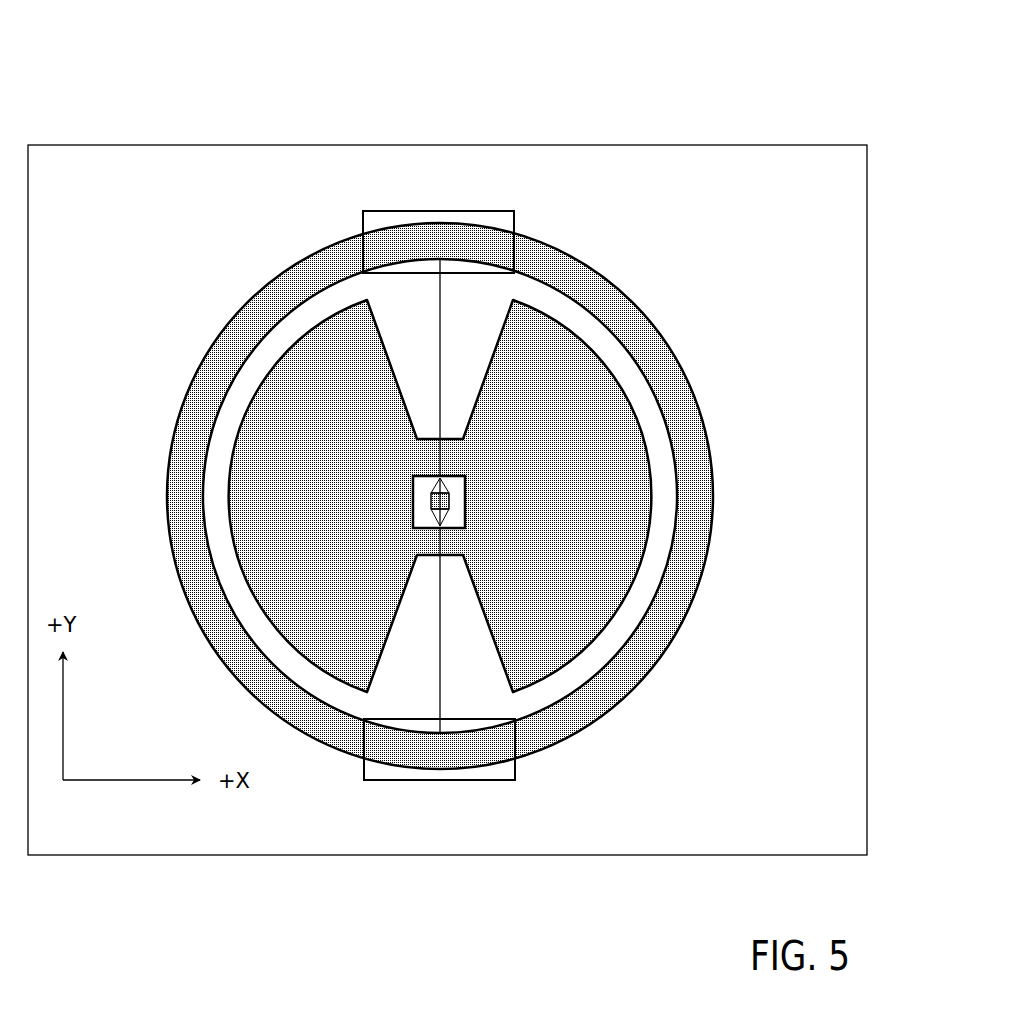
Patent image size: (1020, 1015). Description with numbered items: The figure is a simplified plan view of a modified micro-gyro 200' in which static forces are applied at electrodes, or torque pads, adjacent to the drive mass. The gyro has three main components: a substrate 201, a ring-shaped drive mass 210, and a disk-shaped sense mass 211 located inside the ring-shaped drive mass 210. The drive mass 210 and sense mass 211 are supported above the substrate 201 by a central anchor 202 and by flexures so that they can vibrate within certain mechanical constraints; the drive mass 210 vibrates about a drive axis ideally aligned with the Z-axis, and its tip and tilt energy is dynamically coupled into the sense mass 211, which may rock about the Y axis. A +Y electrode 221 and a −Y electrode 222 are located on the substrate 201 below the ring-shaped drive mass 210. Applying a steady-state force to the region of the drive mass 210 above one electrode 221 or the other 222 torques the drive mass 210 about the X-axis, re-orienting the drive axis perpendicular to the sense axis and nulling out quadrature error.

The modified micro-gyro 200' is at (447, 430).
The substrate 201 is at (843, 832).
The central anchor 202 is at (438, 520).
The ring-shaped drive mass 210 is at (685, 373).
The sense mass 211 is at (592, 645).
The +Y electrode 221 is at (475, 211).
The −Y electrode 222 is at (458, 780).